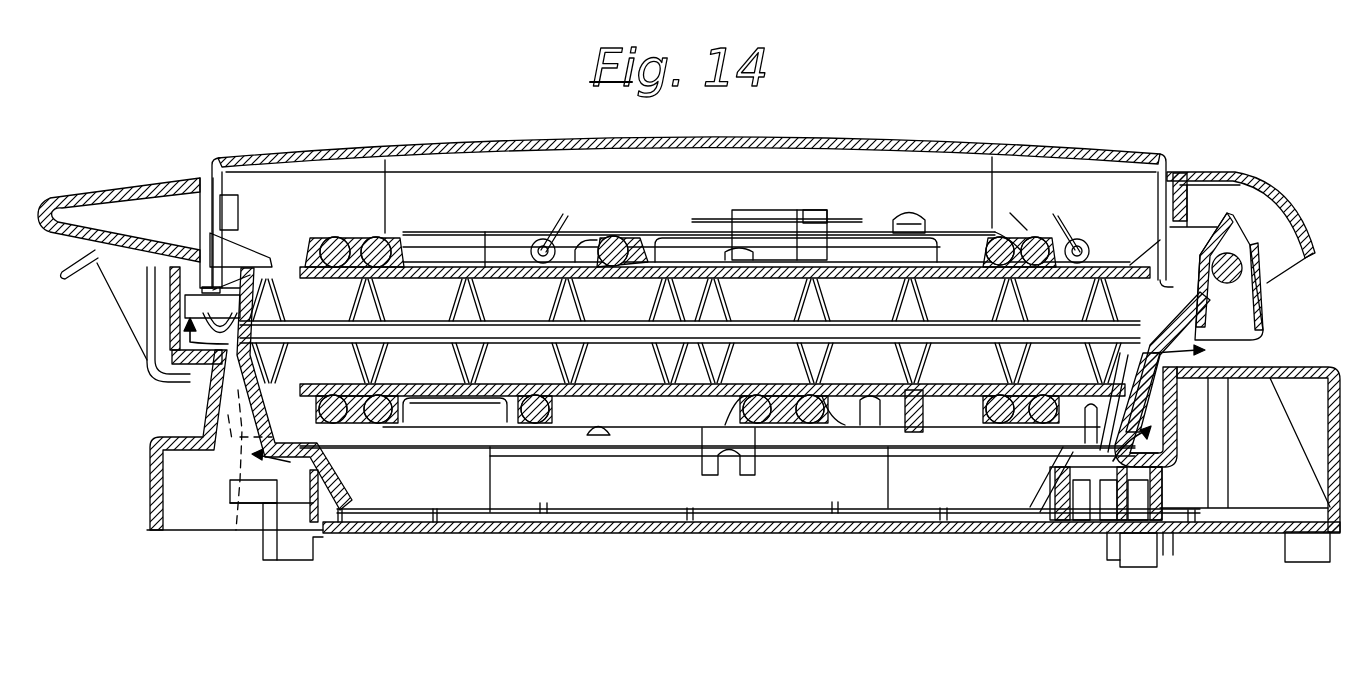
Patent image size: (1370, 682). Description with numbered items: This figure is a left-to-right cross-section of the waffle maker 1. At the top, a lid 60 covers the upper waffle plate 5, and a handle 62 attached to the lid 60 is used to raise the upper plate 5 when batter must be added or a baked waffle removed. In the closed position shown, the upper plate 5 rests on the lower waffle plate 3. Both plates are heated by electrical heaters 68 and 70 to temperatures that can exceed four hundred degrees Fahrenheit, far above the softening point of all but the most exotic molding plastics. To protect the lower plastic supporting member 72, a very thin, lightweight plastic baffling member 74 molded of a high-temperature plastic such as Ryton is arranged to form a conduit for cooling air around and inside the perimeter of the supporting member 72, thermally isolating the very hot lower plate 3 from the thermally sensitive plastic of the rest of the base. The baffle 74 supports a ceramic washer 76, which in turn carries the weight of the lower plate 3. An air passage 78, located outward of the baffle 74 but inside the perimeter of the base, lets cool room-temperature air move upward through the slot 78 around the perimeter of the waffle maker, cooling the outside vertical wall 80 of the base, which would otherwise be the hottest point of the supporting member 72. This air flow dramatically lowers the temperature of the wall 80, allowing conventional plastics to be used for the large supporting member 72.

The waffle maker 1 is at (411, 123).
The lid 60 is at (955, 142).
The handle 62 is at (155, 180).
The upper waffle plate 5 is at (300, 290).
The electrical heater 68 is at (730, 229).
The lower waffle plate 3 is at (300, 368).
The electrical heater 70 is at (300, 368).
The plastic baffling member 74 is at (362, 497).
The ceramic washer 76 is at (206, 490).
The air passage 78 is at (230, 390).
The outside vertical wall 80 is at (1172, 437).
The lower plastic supporting member 72 is at (1083, 507).